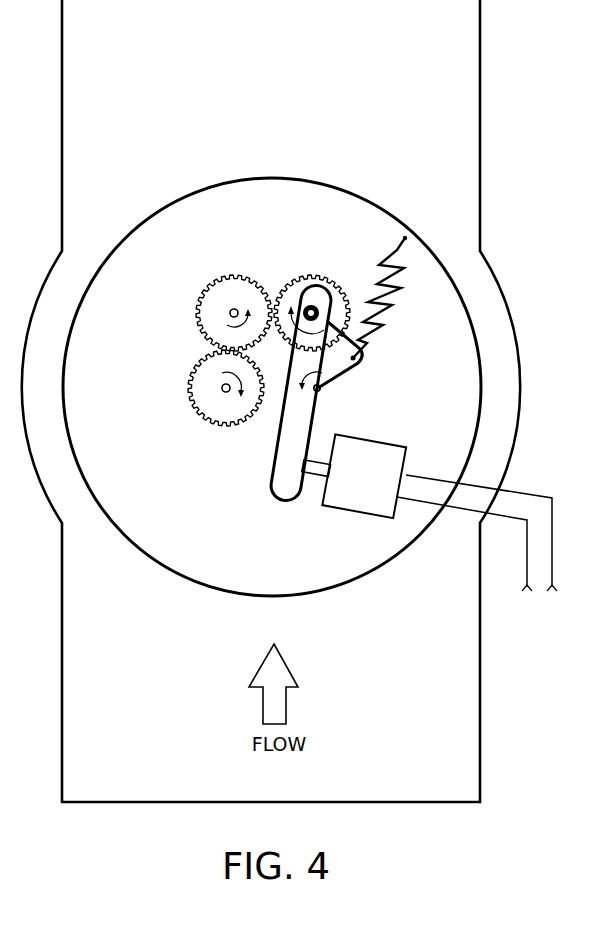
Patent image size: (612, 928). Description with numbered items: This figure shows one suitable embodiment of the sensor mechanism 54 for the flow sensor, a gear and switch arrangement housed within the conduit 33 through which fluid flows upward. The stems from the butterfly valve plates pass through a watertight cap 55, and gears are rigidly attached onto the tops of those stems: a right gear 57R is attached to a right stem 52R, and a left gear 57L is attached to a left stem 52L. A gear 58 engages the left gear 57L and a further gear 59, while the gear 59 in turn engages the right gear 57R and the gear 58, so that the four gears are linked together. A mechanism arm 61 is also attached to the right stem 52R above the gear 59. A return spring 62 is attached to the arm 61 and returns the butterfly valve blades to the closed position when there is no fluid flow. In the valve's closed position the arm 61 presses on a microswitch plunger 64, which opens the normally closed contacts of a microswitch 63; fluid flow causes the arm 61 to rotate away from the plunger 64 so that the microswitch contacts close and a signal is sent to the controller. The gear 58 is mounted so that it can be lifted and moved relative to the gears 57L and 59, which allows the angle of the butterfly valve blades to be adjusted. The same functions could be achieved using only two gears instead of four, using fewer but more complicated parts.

The conduit 33 is at (58, 170).
The sensor mechanism 54 is at (150, 214).
The watertight cap 55 is at (169, 519).
The gear 58 is at (214, 281).
The gear 59 is at (327, 274).
The left gear 57L is at (189, 379).
The right gear 57R is at (355, 390).
The left stem 52L is at (224, 393).
The right stem 52R is at (321, 391).
The mechanism arm 61 is at (303, 450).
The return spring 62 is at (388, 294).
The microswitch 63 is at (377, 486).
The microswitch plunger 64 is at (306, 479).